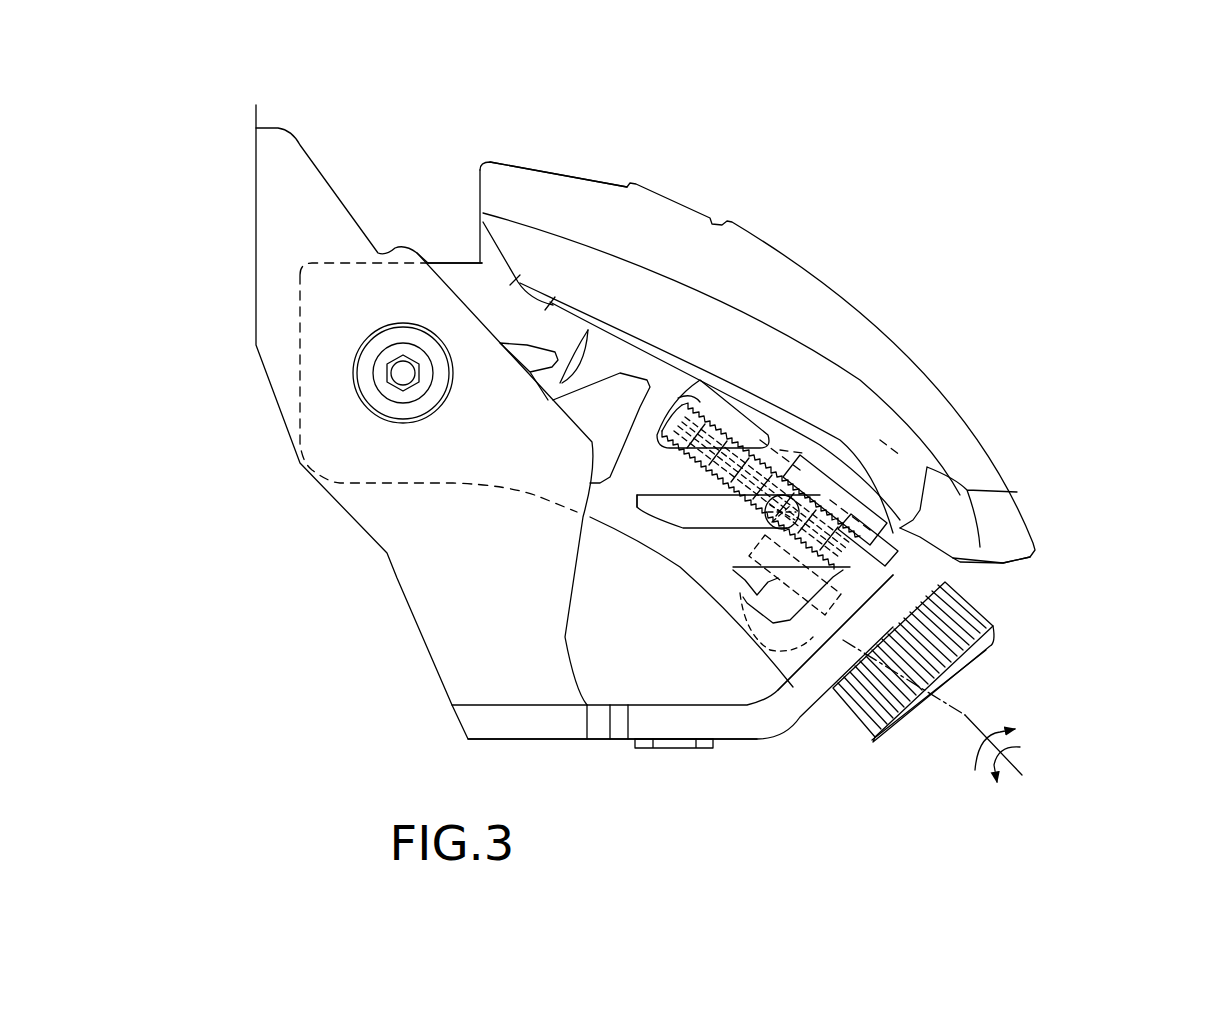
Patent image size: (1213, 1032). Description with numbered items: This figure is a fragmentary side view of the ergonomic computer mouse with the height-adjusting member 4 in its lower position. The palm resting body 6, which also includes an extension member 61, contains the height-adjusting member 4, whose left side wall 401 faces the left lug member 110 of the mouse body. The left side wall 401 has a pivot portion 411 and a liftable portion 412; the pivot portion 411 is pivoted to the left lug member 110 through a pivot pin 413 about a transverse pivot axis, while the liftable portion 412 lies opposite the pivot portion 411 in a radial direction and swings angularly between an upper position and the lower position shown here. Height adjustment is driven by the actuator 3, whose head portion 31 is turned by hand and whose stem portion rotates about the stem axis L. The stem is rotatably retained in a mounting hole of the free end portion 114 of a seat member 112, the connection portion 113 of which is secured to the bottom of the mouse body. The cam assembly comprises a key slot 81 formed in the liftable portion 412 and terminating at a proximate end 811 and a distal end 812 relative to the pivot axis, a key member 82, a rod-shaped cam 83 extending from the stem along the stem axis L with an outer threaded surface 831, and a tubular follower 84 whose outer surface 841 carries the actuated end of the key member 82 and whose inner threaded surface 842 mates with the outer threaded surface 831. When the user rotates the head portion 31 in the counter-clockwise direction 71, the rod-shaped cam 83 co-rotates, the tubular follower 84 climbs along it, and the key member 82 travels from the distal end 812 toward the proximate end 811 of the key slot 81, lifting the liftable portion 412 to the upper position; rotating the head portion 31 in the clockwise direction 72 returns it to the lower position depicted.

The actuator 3 is at (1012, 612).
The height-adjusting member 4 is at (440, 258).
The palm resting body 6 is at (777, 222).
The head portion 31 is at (950, 630).
The extension member 61 is at (603, 218).
The counter-clockwise direction 71 is at (1020, 747).
The clockwise direction 72 is at (975, 771).
The key slot 81 is at (713, 520).
The key member 82 is at (779, 505).
The rod-shaped cam 83 is at (740, 430).
The tubular follower 84 is at (860, 450).
The left lug member 110 is at (440, 577).
The seat member 112 is at (705, 765).
The connection portion 113 is at (663, 712).
The free end portion 114 is at (845, 640).
The left side wall 401 is at (588, 330).
The pivot portion 411 is at (360, 318).
The liftable portion 412 is at (870, 540).
The pivot pin 413 is at (403, 371).
The proximate end 811 is at (645, 503).
The distal end 812 is at (880, 520).
The outer threaded surface 831 is at (693, 407).
The outer surface 841 is at (803, 453).
The inner threaded surface 842 is at (880, 440).
The stem axis L is at (960, 705).